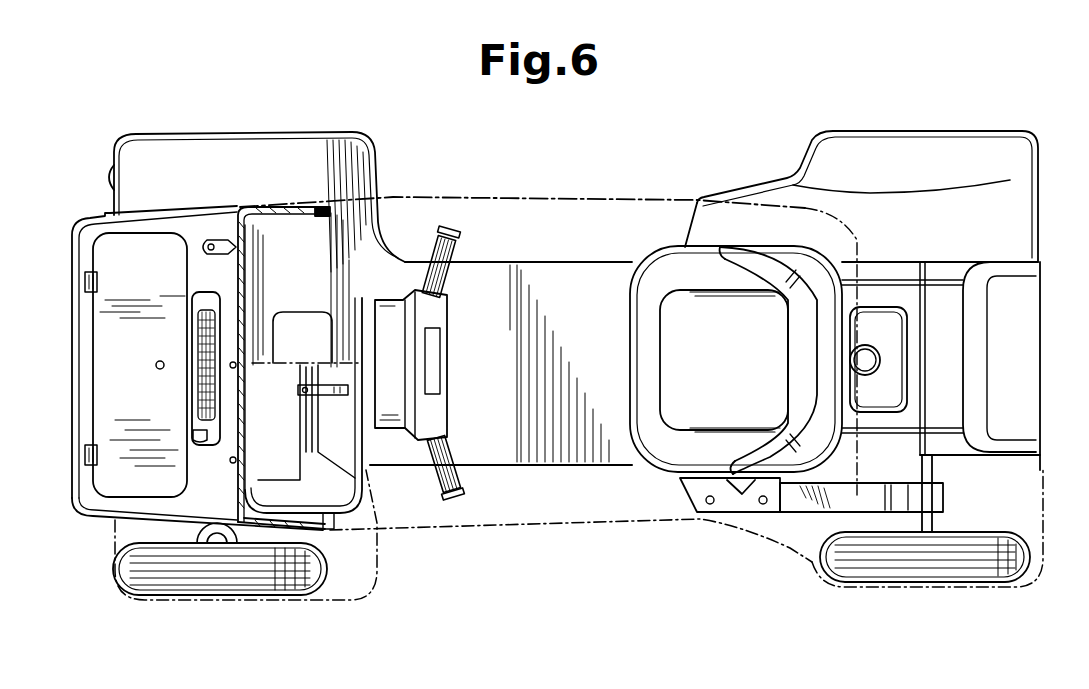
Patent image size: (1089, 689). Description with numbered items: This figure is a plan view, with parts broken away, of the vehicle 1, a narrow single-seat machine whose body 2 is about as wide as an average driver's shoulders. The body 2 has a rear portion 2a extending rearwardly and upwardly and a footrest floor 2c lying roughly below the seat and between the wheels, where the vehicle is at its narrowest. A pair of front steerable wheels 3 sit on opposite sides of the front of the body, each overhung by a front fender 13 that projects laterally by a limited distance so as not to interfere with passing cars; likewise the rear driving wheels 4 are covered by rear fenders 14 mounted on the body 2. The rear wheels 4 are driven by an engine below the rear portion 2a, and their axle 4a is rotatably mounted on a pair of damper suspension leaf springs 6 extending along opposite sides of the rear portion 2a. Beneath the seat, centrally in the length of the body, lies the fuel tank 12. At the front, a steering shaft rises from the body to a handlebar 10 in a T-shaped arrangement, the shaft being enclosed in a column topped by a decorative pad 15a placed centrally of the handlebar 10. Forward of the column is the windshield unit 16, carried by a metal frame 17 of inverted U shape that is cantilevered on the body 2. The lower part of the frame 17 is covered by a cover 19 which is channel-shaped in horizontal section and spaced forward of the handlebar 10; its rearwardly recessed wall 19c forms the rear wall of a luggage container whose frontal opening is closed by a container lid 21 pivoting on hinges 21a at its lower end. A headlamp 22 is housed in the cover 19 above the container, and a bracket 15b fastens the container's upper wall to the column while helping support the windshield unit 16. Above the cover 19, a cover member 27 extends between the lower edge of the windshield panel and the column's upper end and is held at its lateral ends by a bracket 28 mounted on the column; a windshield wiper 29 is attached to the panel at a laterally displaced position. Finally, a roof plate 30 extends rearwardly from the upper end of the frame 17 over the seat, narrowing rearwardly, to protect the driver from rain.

The vehicle 1 is at (571, 533).
The body 2 is at (592, 285).
The rear portion 2a is at (975, 358).
The footrest floor 2c is at (488, 460).
The front steerable wheels 3 is at (203, 580).
The rear driving wheels 4 is at (957, 572).
The axle 4a is at (935, 470).
The damper suspension leaf springs 6 is at (805, 500).
The handlebar 10 is at (448, 255).
The fuel tank 12 is at (893, 328).
The front fenders 13 is at (258, 142).
The rear fenders 14 is at (850, 147).
The decorative pad 15a is at (438, 352).
The bracket 15b is at (346, 396).
The windshield unit 16 is at (512, 197).
The frame 17 is at (367, 533).
The cover 19 is at (191, 241).
The rearwardly recessed wall 19c is at (193, 440).
The container lid 21 is at (110, 336).
The hinges 21a is at (88, 280).
The headlamp 22 is at (200, 355).
The cover member 27 is at (340, 250).
The bracket 28 is at (377, 480).
The windshield wiper 29 is at (224, 240).
The roof plate 30 is at (802, 185).